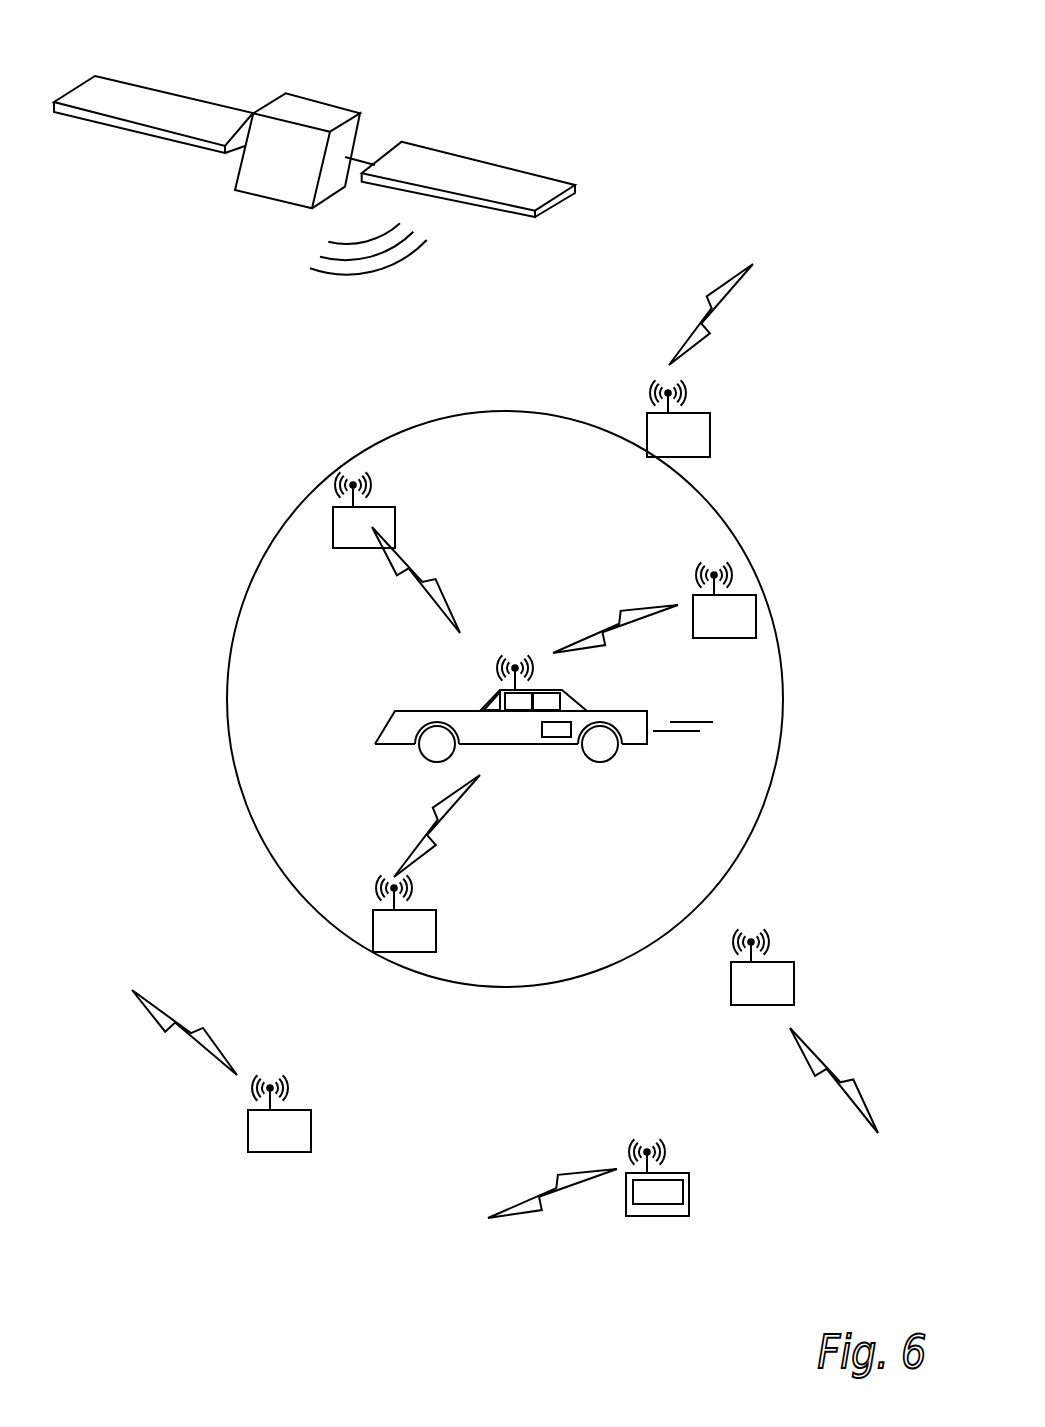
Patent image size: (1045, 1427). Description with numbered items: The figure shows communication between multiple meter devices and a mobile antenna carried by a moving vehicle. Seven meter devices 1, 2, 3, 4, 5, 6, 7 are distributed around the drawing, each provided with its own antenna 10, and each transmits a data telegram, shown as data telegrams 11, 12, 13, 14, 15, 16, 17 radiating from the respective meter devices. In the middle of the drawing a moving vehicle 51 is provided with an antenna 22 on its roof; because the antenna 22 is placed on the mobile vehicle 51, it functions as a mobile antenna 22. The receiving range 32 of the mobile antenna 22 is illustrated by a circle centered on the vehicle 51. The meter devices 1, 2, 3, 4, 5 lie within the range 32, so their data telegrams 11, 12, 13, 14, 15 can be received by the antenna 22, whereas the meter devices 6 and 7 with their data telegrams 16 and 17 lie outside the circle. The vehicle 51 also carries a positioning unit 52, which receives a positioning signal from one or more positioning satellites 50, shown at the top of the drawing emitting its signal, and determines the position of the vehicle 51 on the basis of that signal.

The positioning satellite 50 is at (312, 112).
The receiving range 32 is at (227, 717).
The meter device 1 is at (333, 523).
The meter device 2 is at (703, 413).
The meter device 3 is at (757, 615).
The meter device 4 is at (437, 922).
The meter device 5 is at (794, 995).
The meter device 6 is at (312, 1140).
The meter device 7 is at (689, 1193).
The antenna 10 is at (350, 500).
The data telegram 11 is at (407, 587).
The data telegram 12 is at (707, 300).
The data telegram 13 is at (630, 640).
The data telegram 14 is at (427, 822).
The data telegram 15 is at (817, 1065).
The data telegram 16 is at (172, 1040).
The data telegram 17 is at (557, 1202).
The antenna 22 is at (513, 682).
The vehicle 51 is at (518, 733).
The positioning unit 52 is at (555, 740).